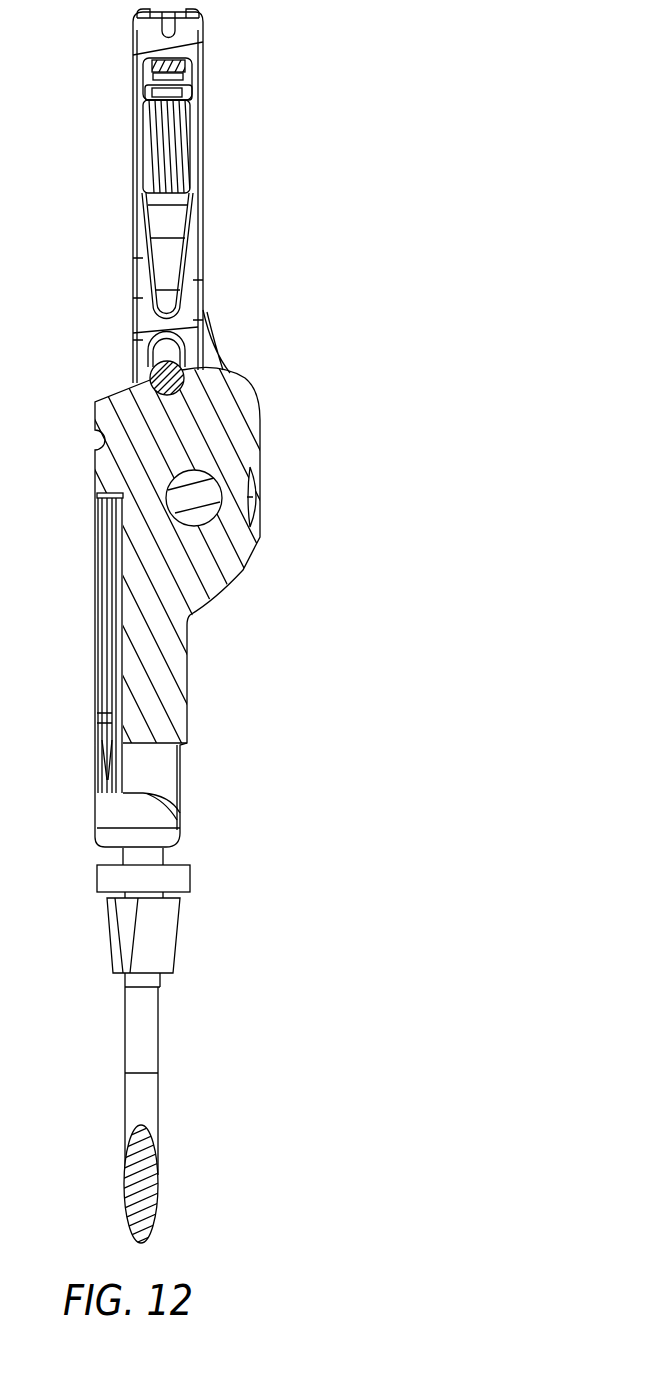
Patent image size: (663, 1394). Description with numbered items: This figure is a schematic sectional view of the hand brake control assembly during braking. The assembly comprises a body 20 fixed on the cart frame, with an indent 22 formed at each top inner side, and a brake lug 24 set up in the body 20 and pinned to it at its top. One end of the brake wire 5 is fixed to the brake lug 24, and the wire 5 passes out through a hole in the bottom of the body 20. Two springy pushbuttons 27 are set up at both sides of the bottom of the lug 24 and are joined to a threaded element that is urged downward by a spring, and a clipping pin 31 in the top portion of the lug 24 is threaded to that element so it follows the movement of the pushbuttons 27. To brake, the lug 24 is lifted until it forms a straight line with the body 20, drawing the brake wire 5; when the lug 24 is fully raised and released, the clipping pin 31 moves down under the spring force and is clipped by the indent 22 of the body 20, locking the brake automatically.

The brake wire 5 is at (143, 1102).
The body 20 is at (210, 550).
The indent 22 is at (178, 396).
The brake lug 24 is at (195, 260).
The springy pushbuttons 27 is at (172, 150).
The clipping pin 31 is at (172, 385).